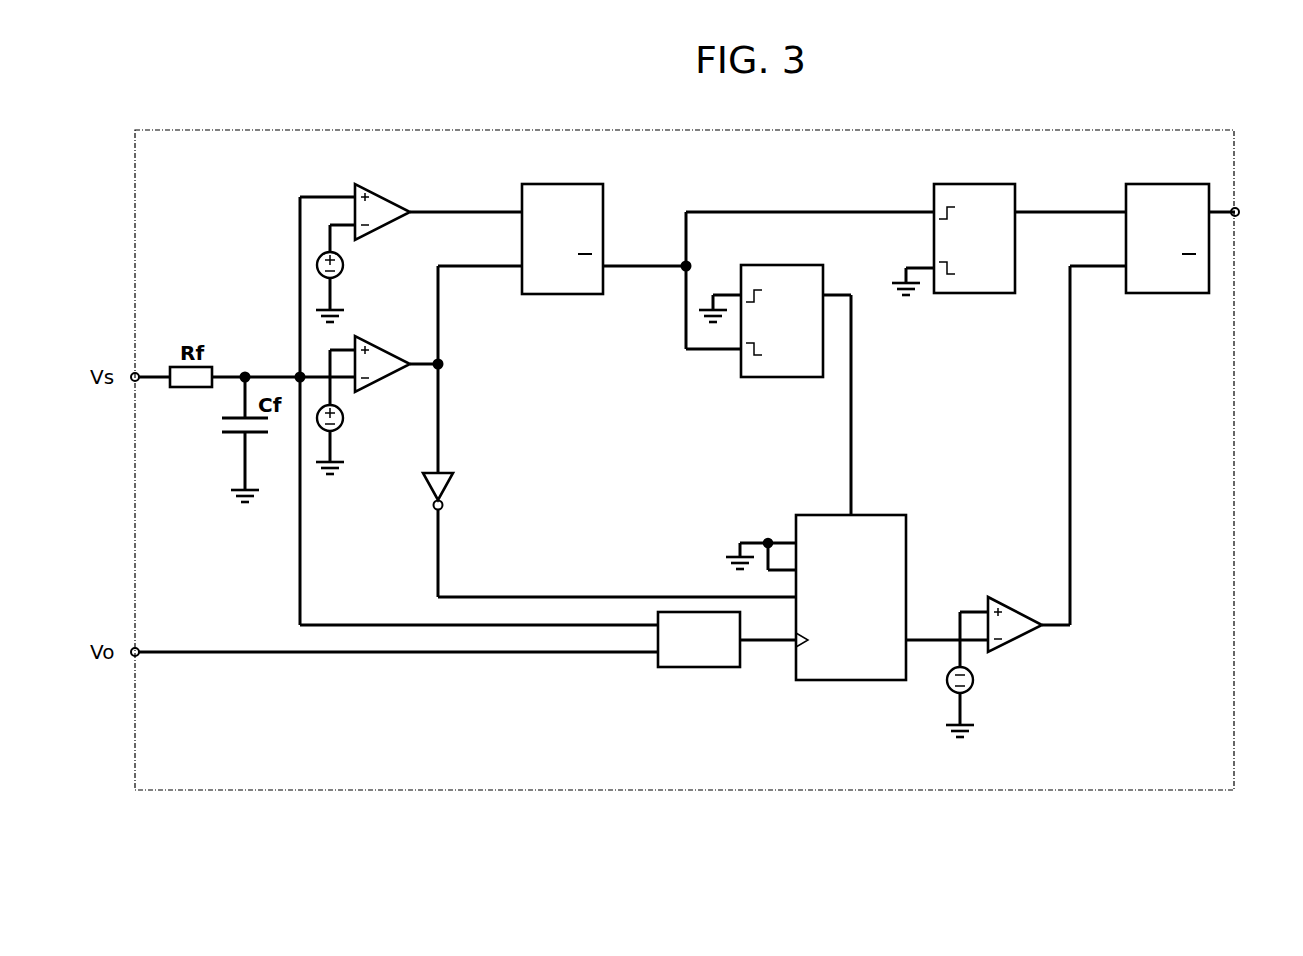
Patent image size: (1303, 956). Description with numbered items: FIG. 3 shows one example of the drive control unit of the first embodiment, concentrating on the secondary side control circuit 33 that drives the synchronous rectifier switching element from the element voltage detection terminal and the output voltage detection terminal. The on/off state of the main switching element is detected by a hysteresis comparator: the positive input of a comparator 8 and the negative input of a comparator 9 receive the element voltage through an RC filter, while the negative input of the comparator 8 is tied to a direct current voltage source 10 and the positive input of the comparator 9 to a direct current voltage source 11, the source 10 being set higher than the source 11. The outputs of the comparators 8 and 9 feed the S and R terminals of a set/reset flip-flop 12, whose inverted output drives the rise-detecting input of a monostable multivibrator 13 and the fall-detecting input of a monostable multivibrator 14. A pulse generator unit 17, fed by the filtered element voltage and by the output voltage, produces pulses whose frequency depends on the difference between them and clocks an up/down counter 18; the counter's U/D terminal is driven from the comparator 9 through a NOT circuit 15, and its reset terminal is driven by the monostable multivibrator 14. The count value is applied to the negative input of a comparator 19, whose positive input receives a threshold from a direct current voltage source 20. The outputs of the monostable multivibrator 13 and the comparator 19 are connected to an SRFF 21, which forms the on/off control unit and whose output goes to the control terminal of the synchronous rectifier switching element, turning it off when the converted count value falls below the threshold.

The comparator 8 is at (355, 184).
The comparator 9 is at (384, 348).
The direct current voltage source 10 is at (316, 265).
The direct current voltage source 11 is at (343, 418).
The set/reset flip-flop 12 is at (522, 184).
The monostable multivibrator 13 is at (934, 184).
The monostable multivibrator 14 is at (741, 378).
The NOT circuit 15 is at (424, 490).
The pulse generator unit 17 is at (658, 667).
The up/down counter 18 is at (796, 515).
The comparator 19 is at (1014, 643).
The direct current voltage source 20 is at (974, 682).
The SRFF 21 is at (1166, 294).
The secondary side control circuit 33 is at (1234, 790).